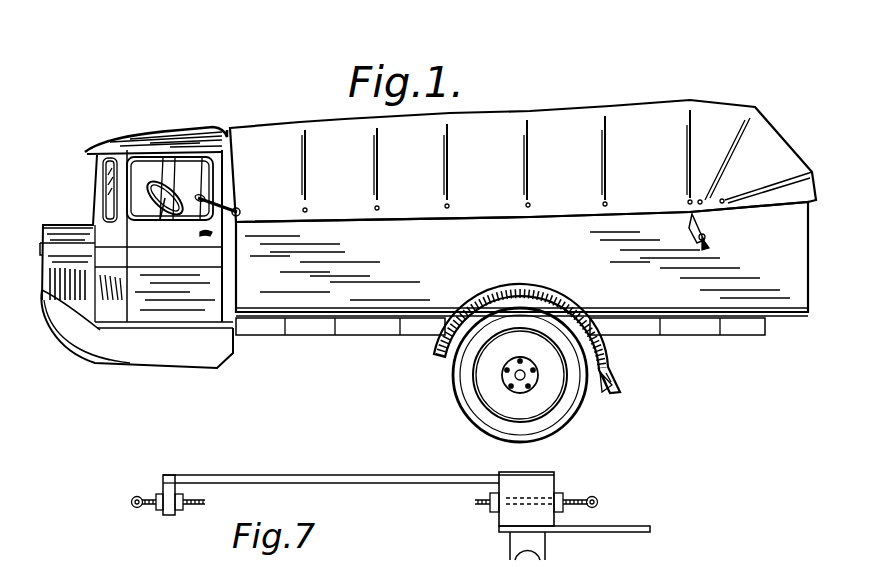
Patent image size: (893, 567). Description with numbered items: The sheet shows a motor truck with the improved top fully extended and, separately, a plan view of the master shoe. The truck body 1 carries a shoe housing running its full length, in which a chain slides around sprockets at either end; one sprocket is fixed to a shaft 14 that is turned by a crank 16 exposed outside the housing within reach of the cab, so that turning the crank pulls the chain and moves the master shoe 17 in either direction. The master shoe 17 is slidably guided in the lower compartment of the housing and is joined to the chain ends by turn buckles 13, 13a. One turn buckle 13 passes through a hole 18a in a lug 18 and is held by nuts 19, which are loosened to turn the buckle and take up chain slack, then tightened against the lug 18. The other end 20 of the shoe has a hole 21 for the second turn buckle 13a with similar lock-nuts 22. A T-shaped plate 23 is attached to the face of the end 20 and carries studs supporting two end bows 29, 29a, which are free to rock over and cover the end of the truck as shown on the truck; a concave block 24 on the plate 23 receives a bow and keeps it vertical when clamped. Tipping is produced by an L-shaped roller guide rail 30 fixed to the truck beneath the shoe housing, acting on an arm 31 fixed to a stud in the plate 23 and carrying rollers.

In FIG. 1, the truck body 1 is at (786, 282).
In FIG. 7, the turn buckle 13 is at (139, 495).
In FIG. 7, the turn buckle 13a is at (575, 497).
In FIG. 1, the shaft 14 is at (240, 212).
In FIG. 1, the crank 16 is at (208, 200).
In FIG. 7, the master shoe 17 is at (358, 492).
In FIG. 7, the lug 18 is at (170, 497).
In FIG. 7, the hole 18a is at (180, 497).
In FIG. 7, the nuts 19 is at (181, 511).
In FIG. 7, the other end of master shoe 20 is at (537, 490).
In FIG. 7, the hole 21 is at (520, 502).
In FIG. 7, the lock-nuts 22 is at (563, 512).
In FIG. 7, the plate 23 is at (565, 532).
In FIG. 7, the concave block 24 is at (512, 540).
In FIG. 1, the end bow 29 is at (752, 120).
In FIG. 1, the end bow 29a is at (796, 178).
In FIG. 1, the roller guide rail 30 is at (710, 233).
In FIG. 1, the arm 31 is at (700, 245).